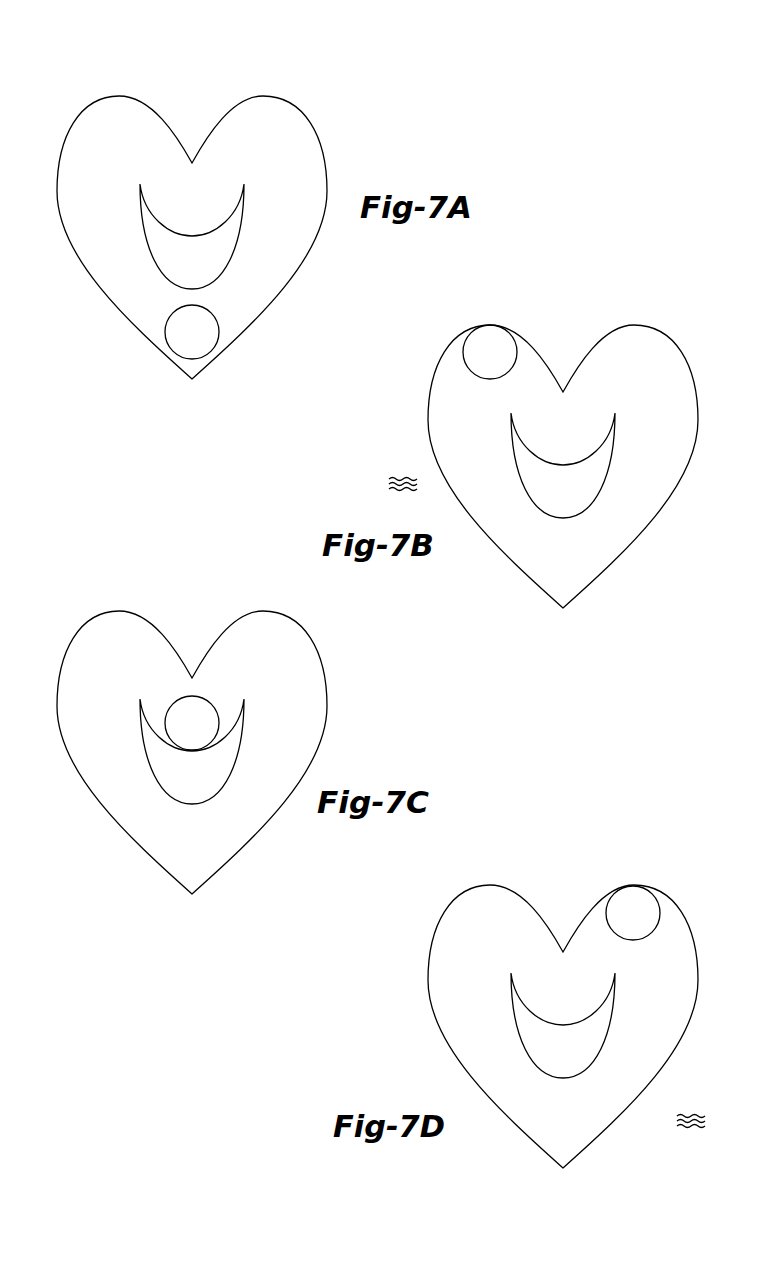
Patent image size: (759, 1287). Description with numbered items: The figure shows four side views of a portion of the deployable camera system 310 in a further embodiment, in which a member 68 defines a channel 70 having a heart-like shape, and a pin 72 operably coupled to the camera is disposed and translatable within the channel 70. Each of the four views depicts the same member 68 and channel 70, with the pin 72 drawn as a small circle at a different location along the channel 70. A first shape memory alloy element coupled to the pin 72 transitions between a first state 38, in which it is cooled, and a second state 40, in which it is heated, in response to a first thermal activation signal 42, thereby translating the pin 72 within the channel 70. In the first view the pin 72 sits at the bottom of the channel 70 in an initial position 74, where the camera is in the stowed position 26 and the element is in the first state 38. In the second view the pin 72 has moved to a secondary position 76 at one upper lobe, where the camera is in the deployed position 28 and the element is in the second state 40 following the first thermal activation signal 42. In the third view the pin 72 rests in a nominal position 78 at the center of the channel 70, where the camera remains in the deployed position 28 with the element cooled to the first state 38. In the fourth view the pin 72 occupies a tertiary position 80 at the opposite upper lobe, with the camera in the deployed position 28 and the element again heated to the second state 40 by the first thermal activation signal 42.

In FIG. 7A, the stowed position 26 is at (153, 368).
In FIG. 7B, the deployed position 28 is at (526, 592).
In FIG. 7C, the deployed position 28 is at (153, 883).
In FIG. 7D, the deployed position 28 is at (526, 1150).
In FIG. 7A, the first state 38 is at (229, 368).
In FIG. 7C, the first state 38 is at (229, 883).
In FIG. 7B, the second state 40 is at (601, 593).
In FIG. 7D, the second state 40 is at (601, 1151).
In FIG. 7B, the first thermal activation signal 42 is at (400, 476).
In FIG. 7D, the first thermal activation signal 42 is at (688, 1113).
In FIG. 7A, the member 68 is at (73, 122).
In FIG. 7B, the member 68 is at (445, 350).
In FIG. 7C, the member 68 is at (72, 637).
In FIG. 7D, the member 68 is at (445, 910).
In FIG. 7A, the channel 70 is at (267, 117).
In FIG. 7B, the channel 70 is at (637, 342).
In FIG. 7C, the channel 70 is at (267, 630).
In FIG. 7D, the channel 70 is at (487, 900).
In FIG. 7A, the pin 72 is at (165, 331).
In FIG. 7B, the pin 72 is at (517, 352).
In FIG. 7C, the pin 72 is at (173, 704).
In FIG. 7D, the pin 72 is at (606, 913).
In FIG. 7A, the initial position 74 is at (97, 74).
In FIG. 7B, the secondary position 76 is at (680, 302).
In FIG. 7C, the nominal position 78 is at (97, 589).
In FIG. 7D, the tertiary position 80 is at (680, 862).
In FIG. 7A, the deployable camera system 310 is at (156, 430).
In FIG. 7B, the deployable camera system 310 is at (526, 658).
In FIG. 7C, the deployable camera system 310 is at (156, 945).
In FIG. 7D, the deployable camera system 310 is at (526, 1217).